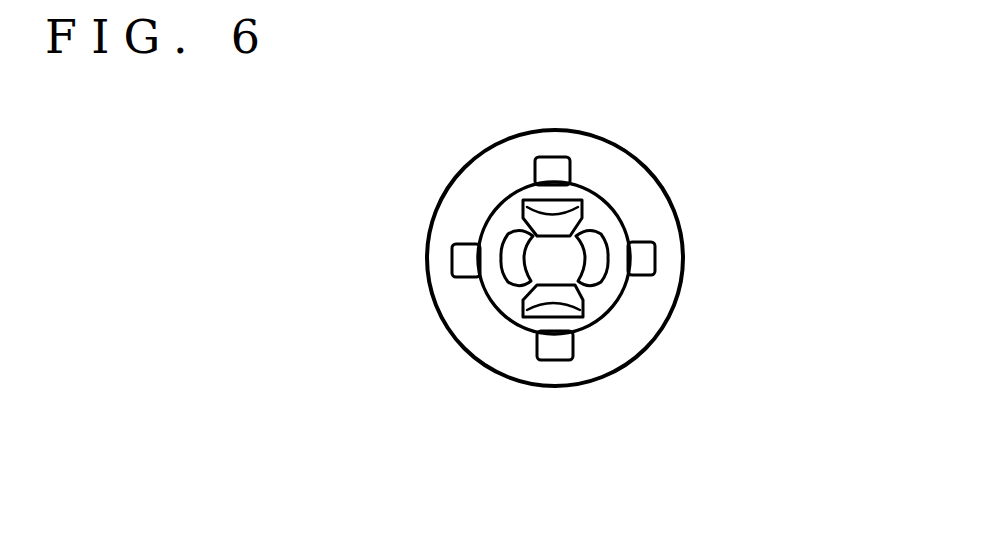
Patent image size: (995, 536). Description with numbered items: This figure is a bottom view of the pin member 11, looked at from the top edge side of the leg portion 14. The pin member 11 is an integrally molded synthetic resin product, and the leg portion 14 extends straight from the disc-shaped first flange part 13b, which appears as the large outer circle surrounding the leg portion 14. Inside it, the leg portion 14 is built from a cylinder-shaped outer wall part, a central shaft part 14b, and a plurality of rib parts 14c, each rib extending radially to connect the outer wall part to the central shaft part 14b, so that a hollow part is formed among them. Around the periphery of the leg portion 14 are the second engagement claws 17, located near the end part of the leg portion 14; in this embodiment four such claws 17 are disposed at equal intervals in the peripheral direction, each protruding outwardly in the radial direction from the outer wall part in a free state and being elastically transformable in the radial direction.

The pin member 11 is at (742, 177).
The first flange part 13b is at (664, 322).
The leg portion 14 is at (610, 207).
The central shaft part 14b is at (548, 262).
The rib parts 14c is at (523, 226).
The second engagement claw 17 is at (547, 164).